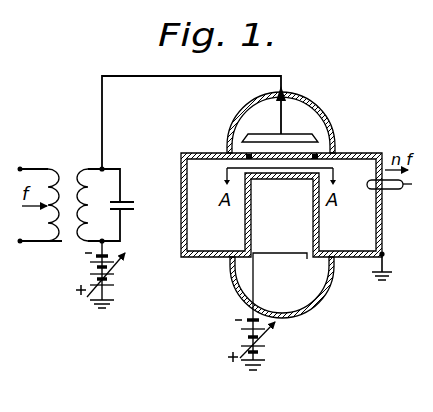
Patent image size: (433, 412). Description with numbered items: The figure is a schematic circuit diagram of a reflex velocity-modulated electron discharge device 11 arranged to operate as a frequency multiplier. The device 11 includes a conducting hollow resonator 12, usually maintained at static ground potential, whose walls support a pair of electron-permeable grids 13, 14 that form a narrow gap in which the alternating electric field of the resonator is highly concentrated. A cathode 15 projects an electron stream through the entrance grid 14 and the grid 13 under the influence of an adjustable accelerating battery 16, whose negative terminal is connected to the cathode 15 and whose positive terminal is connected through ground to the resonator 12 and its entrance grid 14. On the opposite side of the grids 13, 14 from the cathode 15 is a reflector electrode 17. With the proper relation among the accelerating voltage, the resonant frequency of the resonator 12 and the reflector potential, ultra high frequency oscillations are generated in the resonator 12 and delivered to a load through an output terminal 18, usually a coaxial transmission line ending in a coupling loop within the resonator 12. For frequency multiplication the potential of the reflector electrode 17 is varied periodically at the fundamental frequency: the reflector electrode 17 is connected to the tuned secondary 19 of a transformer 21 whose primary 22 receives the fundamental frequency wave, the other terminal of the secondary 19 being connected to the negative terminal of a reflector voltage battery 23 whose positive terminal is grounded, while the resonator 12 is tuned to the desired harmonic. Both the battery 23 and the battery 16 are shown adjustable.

The electron discharge device 11 is at (340, 120).
The hollow resonator 12 is at (372, 232).
The electron-permeable grid 13 is at (258, 149).
The entrance grid 14 is at (277, 180).
The cathode 15 is at (290, 252).
The accelerating battery 16 is at (276, 338).
The reflector electrode 17 is at (255, 133).
The output terminal 18 is at (394, 190).
The tuned secondary 19 is at (100, 167).
The transformer 21 is at (74, 237).
The primary 22 is at (50, 168).
The battery 23 is at (120, 279).